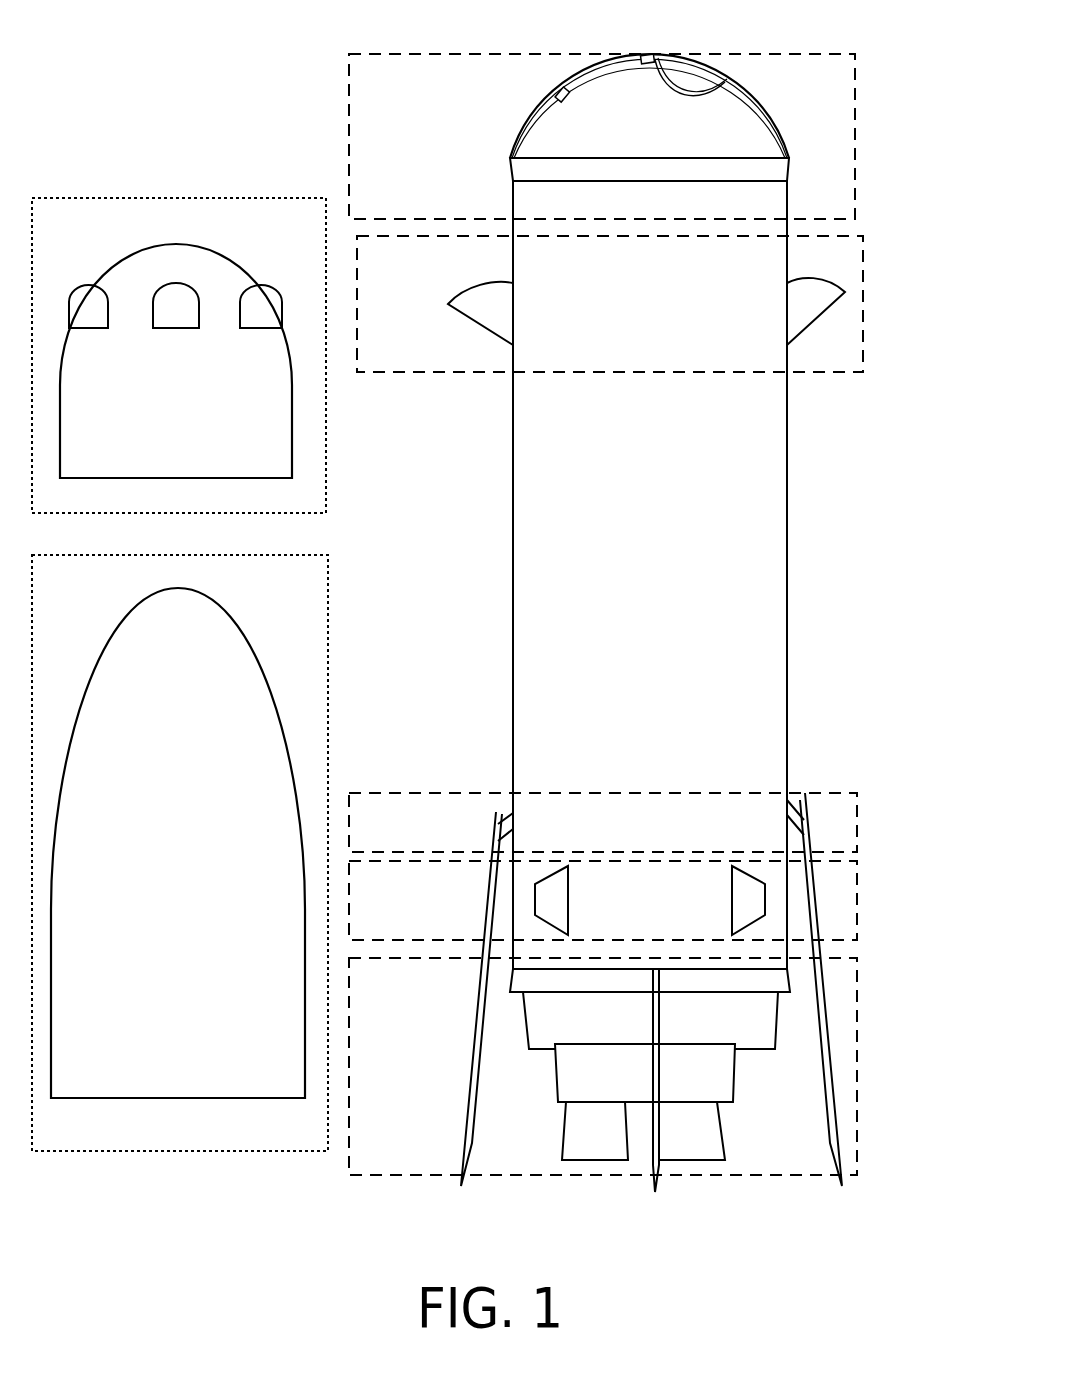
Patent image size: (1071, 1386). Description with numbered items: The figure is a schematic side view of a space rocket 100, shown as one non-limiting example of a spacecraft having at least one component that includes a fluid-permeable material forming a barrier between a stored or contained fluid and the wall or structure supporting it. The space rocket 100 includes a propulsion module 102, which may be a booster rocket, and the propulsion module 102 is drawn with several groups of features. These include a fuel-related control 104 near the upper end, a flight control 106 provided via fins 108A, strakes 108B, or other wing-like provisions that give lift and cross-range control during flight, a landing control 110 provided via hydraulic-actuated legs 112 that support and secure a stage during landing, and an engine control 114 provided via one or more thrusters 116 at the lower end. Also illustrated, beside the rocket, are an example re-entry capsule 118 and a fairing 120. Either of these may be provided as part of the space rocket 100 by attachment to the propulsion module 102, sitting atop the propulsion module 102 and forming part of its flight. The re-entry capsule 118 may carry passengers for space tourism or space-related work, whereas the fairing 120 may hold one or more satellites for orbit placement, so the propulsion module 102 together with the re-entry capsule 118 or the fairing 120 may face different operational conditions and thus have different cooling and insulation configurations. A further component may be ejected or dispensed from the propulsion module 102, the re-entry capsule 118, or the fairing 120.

The space rocket 100 is at (796, 36).
The propulsion module 102 is at (668, 524).
The fuel-related control 104 is at (398, 89).
The flight control 106 is at (402, 274).
The fins 108A is at (831, 283).
The strakes 108B is at (762, 896).
The landing control 110 is at (398, 829).
The hydraulic-actuated legs 112 is at (808, 830).
The engine control 114 is at (398, 994).
The thrusters 116 is at (730, 1118).
The re-entry capsule 118 is at (318, 232).
The fairing 120 is at (320, 591).